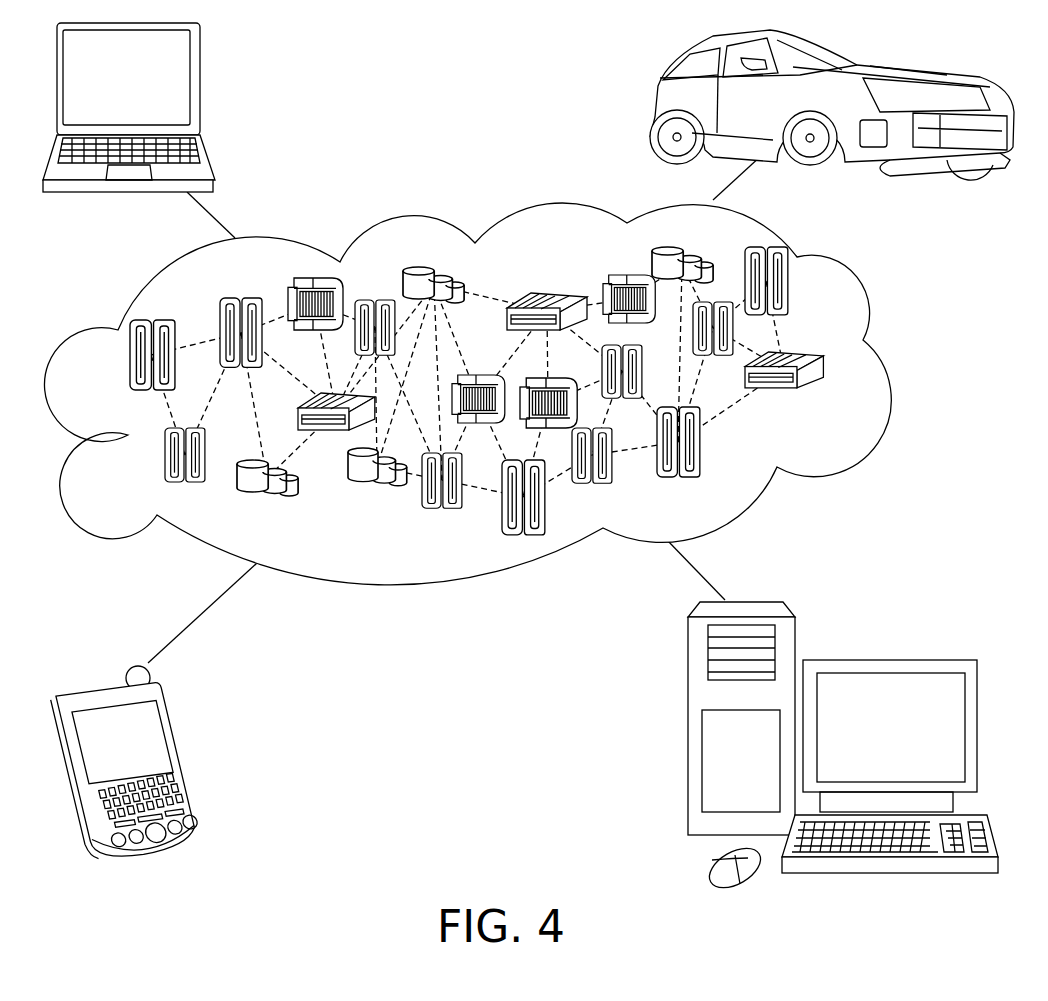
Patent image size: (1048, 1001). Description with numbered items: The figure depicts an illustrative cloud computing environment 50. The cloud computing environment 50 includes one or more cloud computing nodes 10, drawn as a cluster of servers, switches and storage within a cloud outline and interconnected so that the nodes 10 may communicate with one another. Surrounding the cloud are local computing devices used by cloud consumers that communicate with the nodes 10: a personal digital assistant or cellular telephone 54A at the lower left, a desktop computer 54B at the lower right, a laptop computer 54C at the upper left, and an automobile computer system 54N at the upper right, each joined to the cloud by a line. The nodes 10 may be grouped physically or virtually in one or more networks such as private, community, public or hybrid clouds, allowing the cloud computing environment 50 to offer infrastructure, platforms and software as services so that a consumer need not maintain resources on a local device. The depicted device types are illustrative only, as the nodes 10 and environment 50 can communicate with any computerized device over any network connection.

The cloud computing nodes 10 is at (830, 398).
The cloud computing environment 50 is at (888, 367).
The personal digital assistant (PDA) or cellular telephone 54A is at (192, 760).
The desktop computer 54B is at (888, 660).
The laptop computer 54C is at (203, 90).
The automobile computer system 54N is at (660, 106).